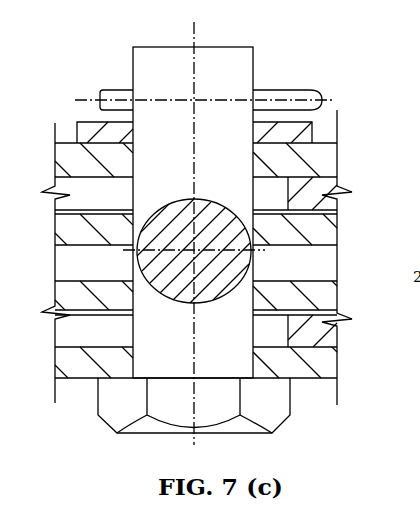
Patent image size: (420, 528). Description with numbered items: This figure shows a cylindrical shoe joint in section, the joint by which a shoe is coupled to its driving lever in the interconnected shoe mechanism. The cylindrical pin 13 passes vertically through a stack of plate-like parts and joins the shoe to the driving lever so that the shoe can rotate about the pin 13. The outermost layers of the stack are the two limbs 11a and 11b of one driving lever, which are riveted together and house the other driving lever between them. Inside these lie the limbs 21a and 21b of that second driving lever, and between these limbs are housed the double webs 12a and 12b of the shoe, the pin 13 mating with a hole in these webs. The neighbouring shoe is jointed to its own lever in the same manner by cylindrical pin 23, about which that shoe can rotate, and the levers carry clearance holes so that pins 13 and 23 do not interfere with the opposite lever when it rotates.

The cylindrical pin 13 is at (228, 73).
The limb of driving lever 11a is at (318, 162).
The limb of driving lever 21a is at (322, 202).
The web of shoe 12a is at (320, 237).
The web of shoe 12b is at (327, 300).
The limb of driving lever 21b is at (323, 332).
The limb of driving lever 11b is at (327, 370).
The cylindrical pin 23 is at (354, 136).